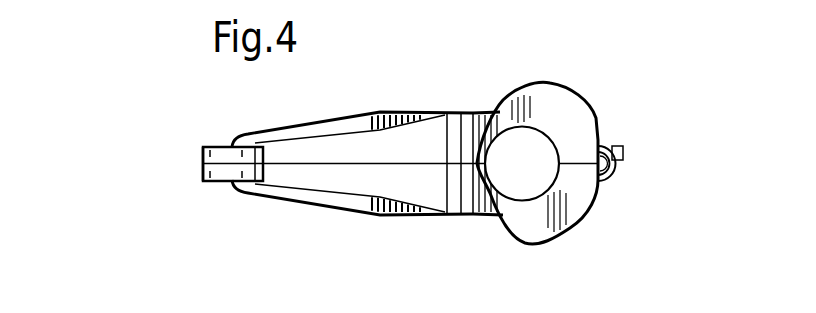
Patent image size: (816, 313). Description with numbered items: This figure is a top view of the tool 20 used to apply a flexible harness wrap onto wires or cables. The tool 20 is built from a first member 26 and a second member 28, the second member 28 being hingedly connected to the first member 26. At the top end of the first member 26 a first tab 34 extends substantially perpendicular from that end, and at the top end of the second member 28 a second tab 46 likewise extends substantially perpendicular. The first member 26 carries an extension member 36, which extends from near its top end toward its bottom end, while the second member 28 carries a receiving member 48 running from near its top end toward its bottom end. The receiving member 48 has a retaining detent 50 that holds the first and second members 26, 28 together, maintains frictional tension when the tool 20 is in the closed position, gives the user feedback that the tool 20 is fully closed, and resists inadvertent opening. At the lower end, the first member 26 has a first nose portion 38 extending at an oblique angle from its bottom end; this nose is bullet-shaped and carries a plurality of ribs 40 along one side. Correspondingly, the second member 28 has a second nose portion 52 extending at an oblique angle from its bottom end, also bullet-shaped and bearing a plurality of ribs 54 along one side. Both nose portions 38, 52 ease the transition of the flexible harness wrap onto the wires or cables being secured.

The tool 20 is at (438, 92).
The first member 26 is at (455, 197).
The second member 28 is at (453, 145).
The first tab 34 is at (567, 213).
The extension member 36 is at (604, 143).
The first nose portion 38 is at (203, 173).
The ribs 40 is at (342, 202).
The second tab 46 is at (557, 102).
The receiving member 48 is at (617, 180).
The retaining detent 50 is at (615, 146).
The second nose portion 52 is at (203, 150).
The ribs 54 is at (326, 128).